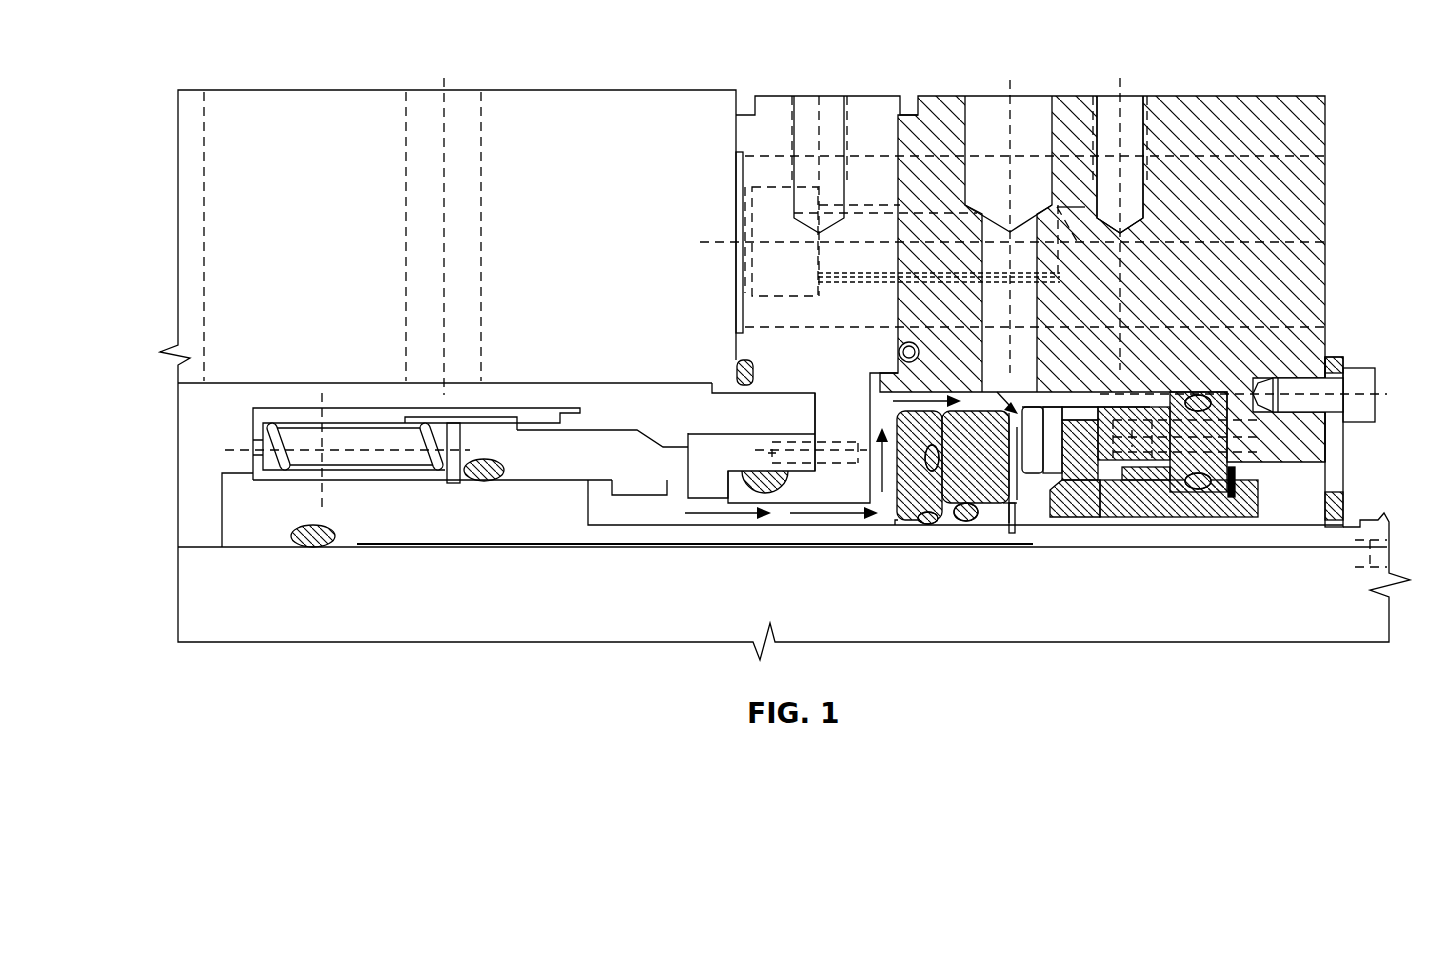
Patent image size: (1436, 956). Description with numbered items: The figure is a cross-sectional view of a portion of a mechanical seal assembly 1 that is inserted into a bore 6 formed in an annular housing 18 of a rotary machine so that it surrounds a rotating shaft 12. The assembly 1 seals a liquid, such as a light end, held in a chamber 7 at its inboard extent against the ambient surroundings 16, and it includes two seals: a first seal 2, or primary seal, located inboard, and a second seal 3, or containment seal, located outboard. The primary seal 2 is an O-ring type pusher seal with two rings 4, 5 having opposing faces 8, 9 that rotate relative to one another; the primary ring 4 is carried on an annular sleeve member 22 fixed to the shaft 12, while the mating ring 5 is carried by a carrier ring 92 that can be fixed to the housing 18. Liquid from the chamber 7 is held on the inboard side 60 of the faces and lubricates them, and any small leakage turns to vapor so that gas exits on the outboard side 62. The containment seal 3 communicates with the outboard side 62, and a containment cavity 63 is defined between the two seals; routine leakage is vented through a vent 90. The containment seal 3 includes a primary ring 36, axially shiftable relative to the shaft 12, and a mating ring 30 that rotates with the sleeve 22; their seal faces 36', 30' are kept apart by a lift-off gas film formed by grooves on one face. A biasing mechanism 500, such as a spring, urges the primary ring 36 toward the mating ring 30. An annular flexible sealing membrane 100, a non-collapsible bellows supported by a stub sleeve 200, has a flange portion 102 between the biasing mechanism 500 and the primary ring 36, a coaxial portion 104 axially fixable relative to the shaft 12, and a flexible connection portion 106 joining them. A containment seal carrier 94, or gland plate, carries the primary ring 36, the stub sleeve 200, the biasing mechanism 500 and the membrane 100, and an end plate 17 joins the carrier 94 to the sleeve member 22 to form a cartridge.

The mechanical seal assembly 1 is at (652, 46).
The first seal 2 is at (610, 398).
The second seal 3 is at (999, 580).
The primary ring 4 is at (561, 468).
The mating ring 5 is at (739, 468).
The bore 6 is at (237, 397).
The chamber 7 is at (206, 475).
The face 8 is at (680, 463).
The face 9 is at (703, 458).
The rotating shaft 12 is at (300, 597).
The ambient surroundings 16 is at (1408, 304).
The end plate 17 is at (1345, 467).
The annular housing 18 is at (320, 232).
The annular sleeve member 22 is at (505, 548).
The mating ring 30 is at (937, 510).
The seal face 30' is at (979, 467).
The primary ring 36 is at (1047, 550).
The seal face 36' is at (1061, 480).
The inboard side 60 is at (677, 425).
The outboard side 62 is at (680, 503).
The containment cavity 63 is at (810, 513).
The vent 90 is at (963, 140).
The carrier ring 92 is at (777, 113).
The containment seal carrier 94 is at (1223, 117).
The annular flexible sealing membrane 100 is at (1153, 503).
The flange portion 102 is at (1120, 492).
The coaxial portion 104 is at (1205, 510).
The flexible connection portion 106 is at (1110, 487).
The stub sleeve 200 is at (1212, 498).
The biasing mechanism 500 is at (1237, 498).